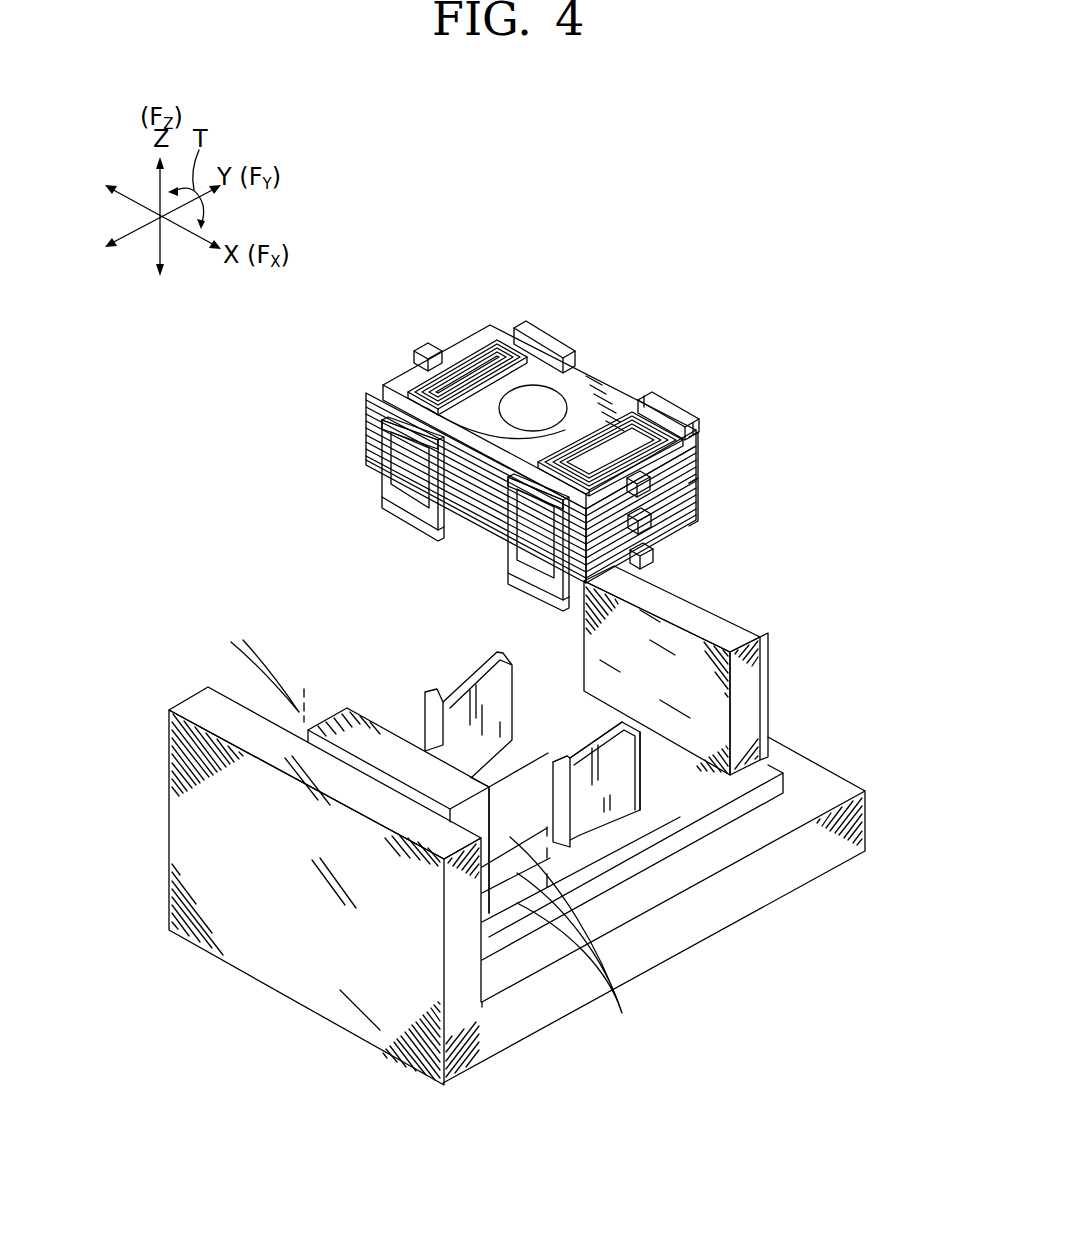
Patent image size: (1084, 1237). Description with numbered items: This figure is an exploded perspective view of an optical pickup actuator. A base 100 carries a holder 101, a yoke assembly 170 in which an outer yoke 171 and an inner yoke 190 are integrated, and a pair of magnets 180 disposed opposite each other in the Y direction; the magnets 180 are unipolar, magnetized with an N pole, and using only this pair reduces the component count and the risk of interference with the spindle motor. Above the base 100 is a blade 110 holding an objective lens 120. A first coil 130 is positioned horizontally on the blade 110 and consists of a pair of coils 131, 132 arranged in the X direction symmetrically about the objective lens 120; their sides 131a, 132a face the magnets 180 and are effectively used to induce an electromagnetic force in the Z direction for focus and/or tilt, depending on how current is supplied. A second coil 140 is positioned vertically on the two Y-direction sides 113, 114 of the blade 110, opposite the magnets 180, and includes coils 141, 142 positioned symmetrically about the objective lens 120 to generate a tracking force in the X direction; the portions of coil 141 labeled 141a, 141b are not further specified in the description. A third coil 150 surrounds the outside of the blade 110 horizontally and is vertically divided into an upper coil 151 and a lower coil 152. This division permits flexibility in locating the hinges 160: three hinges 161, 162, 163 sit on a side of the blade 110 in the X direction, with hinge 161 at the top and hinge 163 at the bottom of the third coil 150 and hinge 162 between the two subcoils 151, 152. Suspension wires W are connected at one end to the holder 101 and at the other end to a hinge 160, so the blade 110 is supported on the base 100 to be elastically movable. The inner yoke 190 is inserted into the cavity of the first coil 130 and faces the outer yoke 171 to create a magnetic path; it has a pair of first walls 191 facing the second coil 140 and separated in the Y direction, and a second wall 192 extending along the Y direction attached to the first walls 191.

The base 100 is at (700, 955).
The holder 101 is at (483, 995).
The blade 110 is at (623, 385).
The side of the blade 113 is at (488, 452).
The side of the blade 114 is at (584, 378).
The objective lens 120 is at (550, 400).
The first coil 130 is at (690, 215).
The coil 131 is at (540, 330).
The side of coil 131a is at (428, 380).
The coil 132 is at (660, 395).
The side of coil 132a is at (692, 400).
The second coil 140 is at (240, 422).
The coil 141 is at (408, 530).
The clamp foot 141a is at (383, 483).
The clamp side leg 141b is at (428, 515).
The coil 142 is at (381, 404).
The third coil 150 is at (767, 475).
The upper coil 151 is at (700, 448).
The lower coil 152 is at (698, 482).
The hinge 160 is at (604, 434).
The hinge 161 is at (652, 486).
The hinge 162 is at (652, 522).
The hinge 163 is at (654, 558).
The yoke assembly 170 is at (795, 770).
The outer yoke 171 is at (322, 712).
The magnet 180 is at (354, 724).
The inner yoke 190 is at (464, 668).
The first wall 191 is at (643, 733).
The second wall 192 is at (588, 743).
The suspension wire W is at (627, 1024).